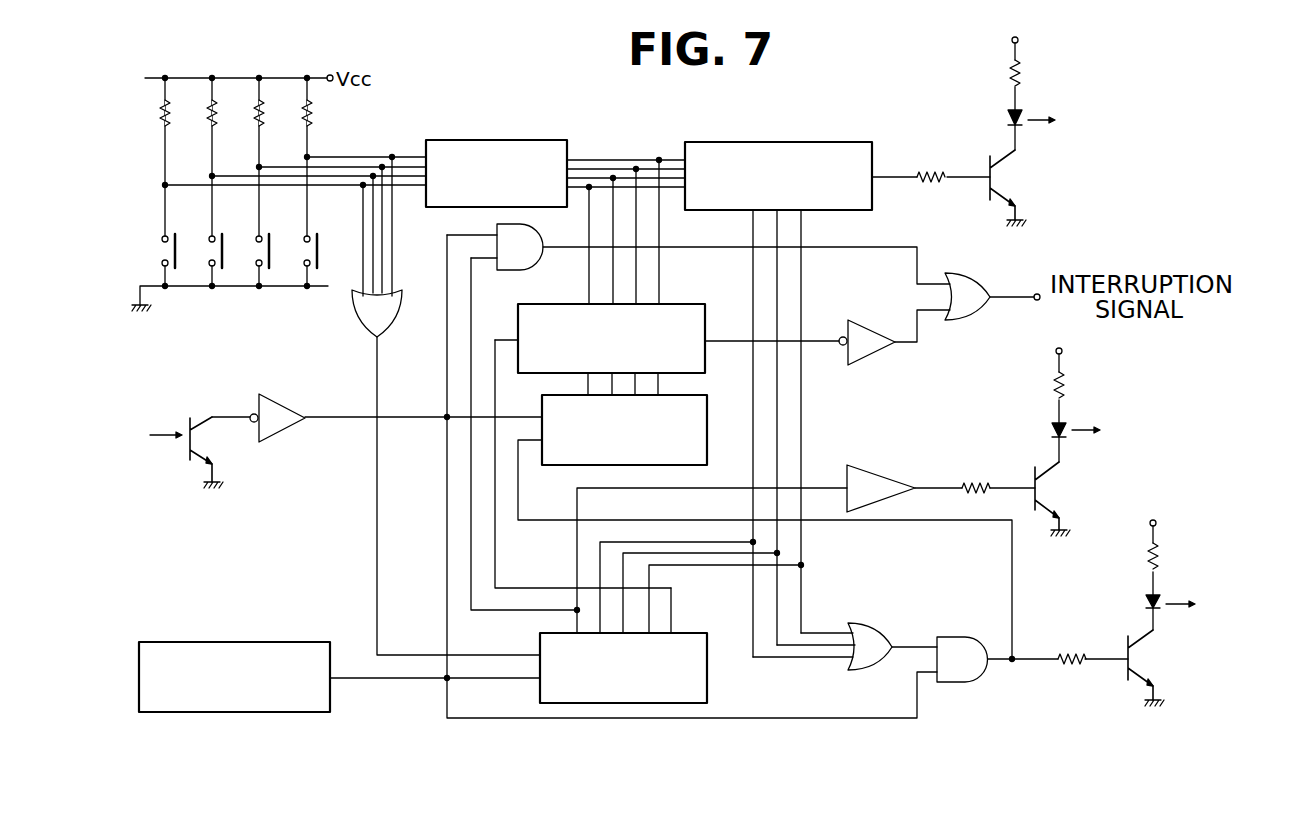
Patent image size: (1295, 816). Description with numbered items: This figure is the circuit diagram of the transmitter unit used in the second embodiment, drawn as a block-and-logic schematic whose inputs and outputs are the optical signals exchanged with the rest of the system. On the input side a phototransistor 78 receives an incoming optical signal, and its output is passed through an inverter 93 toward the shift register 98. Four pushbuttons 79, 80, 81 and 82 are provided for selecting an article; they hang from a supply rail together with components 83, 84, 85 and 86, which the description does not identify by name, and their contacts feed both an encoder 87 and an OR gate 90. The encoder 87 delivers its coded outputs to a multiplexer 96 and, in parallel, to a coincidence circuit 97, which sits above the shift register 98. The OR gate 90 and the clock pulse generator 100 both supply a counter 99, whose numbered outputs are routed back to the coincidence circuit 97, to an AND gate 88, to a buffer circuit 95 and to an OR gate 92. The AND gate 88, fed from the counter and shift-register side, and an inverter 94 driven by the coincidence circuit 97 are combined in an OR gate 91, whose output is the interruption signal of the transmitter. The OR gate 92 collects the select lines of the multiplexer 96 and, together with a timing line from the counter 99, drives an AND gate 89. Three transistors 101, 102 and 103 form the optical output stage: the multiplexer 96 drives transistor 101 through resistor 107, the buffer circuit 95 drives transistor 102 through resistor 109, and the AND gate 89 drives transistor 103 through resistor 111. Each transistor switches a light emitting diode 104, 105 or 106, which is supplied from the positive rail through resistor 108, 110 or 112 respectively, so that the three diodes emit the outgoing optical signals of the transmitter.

The phototransistor 78 is at (200, 438).
The pushbutton 79 is at (162, 250).
The pushbutton 80 is at (229, 242).
The pushbutton 81 is at (279, 242).
The pushbutton 82 is at (327, 242).
The resistor 83 is at (160, 114).
The resistor 84 is at (207, 110).
The resistor 85 is at (264, 112).
The resistor 86 is at (315, 110).
The encoder 87 is at (497, 140).
The AND gate 88 is at (534, 266).
The AND gate 89 is at (955, 637).
The OR gate 90 is at (363, 326).
The OR gate 91 is at (966, 318).
The OR gate 92 is at (884, 623).
The inverter 93 is at (294, 422).
The inverter 94 is at (878, 358).
The buffer circuit 95 is at (896, 498).
The multiplexer 96 is at (818, 142).
The coincidence circuit 97 is at (672, 304).
The shift register 98 is at (700, 396).
The counter 99 is at (708, 670).
The clock pulse generator 100 is at (228, 642).
The transistor 101 is at (1000, 181).
The transistor 102 is at (1045, 491).
The transistor 103 is at (1138, 661).
The light emitting diode 104 is at (1006, 124).
The light emitting diode 105 is at (1051, 428).
The light emitting diode 106 is at (1145, 605).
The resistor 107 is at (934, 187).
The resistor 108 is at (1022, 75).
The resistor 109 is at (974, 482).
The resistor 110 is at (1068, 387).
The resistor 111 is at (1071, 668).
The resistor 112 is at (1162, 560).